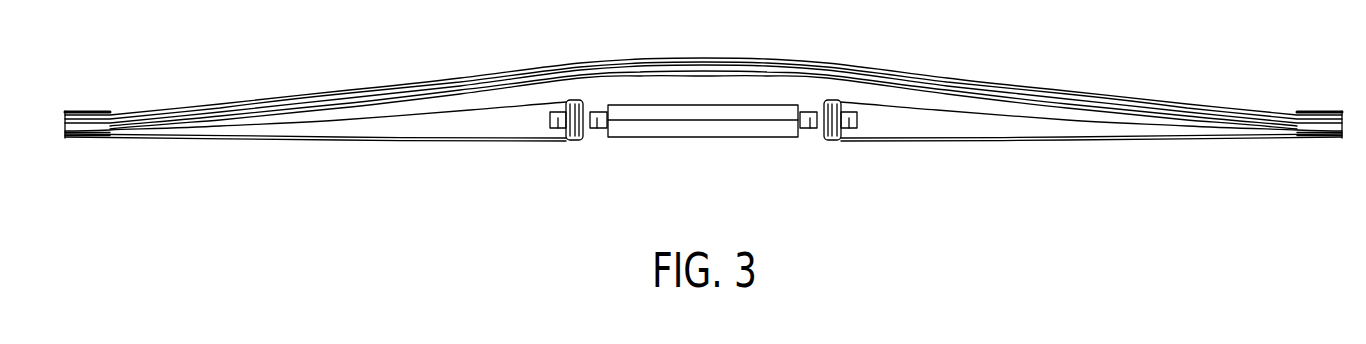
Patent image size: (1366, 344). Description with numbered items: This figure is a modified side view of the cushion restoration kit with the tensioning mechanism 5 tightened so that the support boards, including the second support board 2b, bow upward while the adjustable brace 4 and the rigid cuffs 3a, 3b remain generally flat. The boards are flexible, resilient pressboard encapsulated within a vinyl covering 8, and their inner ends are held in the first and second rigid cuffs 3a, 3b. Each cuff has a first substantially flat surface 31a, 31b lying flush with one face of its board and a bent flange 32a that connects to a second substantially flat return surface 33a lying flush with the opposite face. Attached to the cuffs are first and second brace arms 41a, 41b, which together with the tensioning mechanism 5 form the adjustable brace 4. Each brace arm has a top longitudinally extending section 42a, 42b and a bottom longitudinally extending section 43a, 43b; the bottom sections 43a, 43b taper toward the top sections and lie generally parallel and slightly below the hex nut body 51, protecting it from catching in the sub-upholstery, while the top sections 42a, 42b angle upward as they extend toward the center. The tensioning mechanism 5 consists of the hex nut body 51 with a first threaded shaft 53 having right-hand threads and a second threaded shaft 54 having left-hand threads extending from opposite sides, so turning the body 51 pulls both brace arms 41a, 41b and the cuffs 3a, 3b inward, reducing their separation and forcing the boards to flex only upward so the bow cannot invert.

The second support board 2b is at (381, 101).
The first rigid cuff 3a is at (1342, 113).
The second rigid cuff 3b is at (66, 113).
The adjustable brace 4 is at (702, 160).
The tensioning mechanism 5 is at (763, 118).
The vinyl covering 8 is at (531, 68).
The first substantially flat surface of first rigid cuff 31a is at (1313, 111).
The first substantially flat surface of second rigid cuff 31b is at (92, 111).
The bent flange 32a is at (65, 138).
The second substantially flat return surface 33a is at (107, 138).
The first brace arm 41a is at (972, 140).
The second brace arm 41b is at (433, 140).
The top longitudinally extending section of first brace arm 42a is at (937, 108).
The top longitudinally extending section of second brace arm 42b is at (470, 110).
The bottom longitudinally extending section of first brace arm 43a is at (1069, 139).
The bottom longitudinally extending section of second brace arm 43b is at (321, 140).
The hex nut body 51 is at (643, 126).
The first threaded shaft 53 is at (853, 118).
The second threaded shaft 54 is at (550, 122).